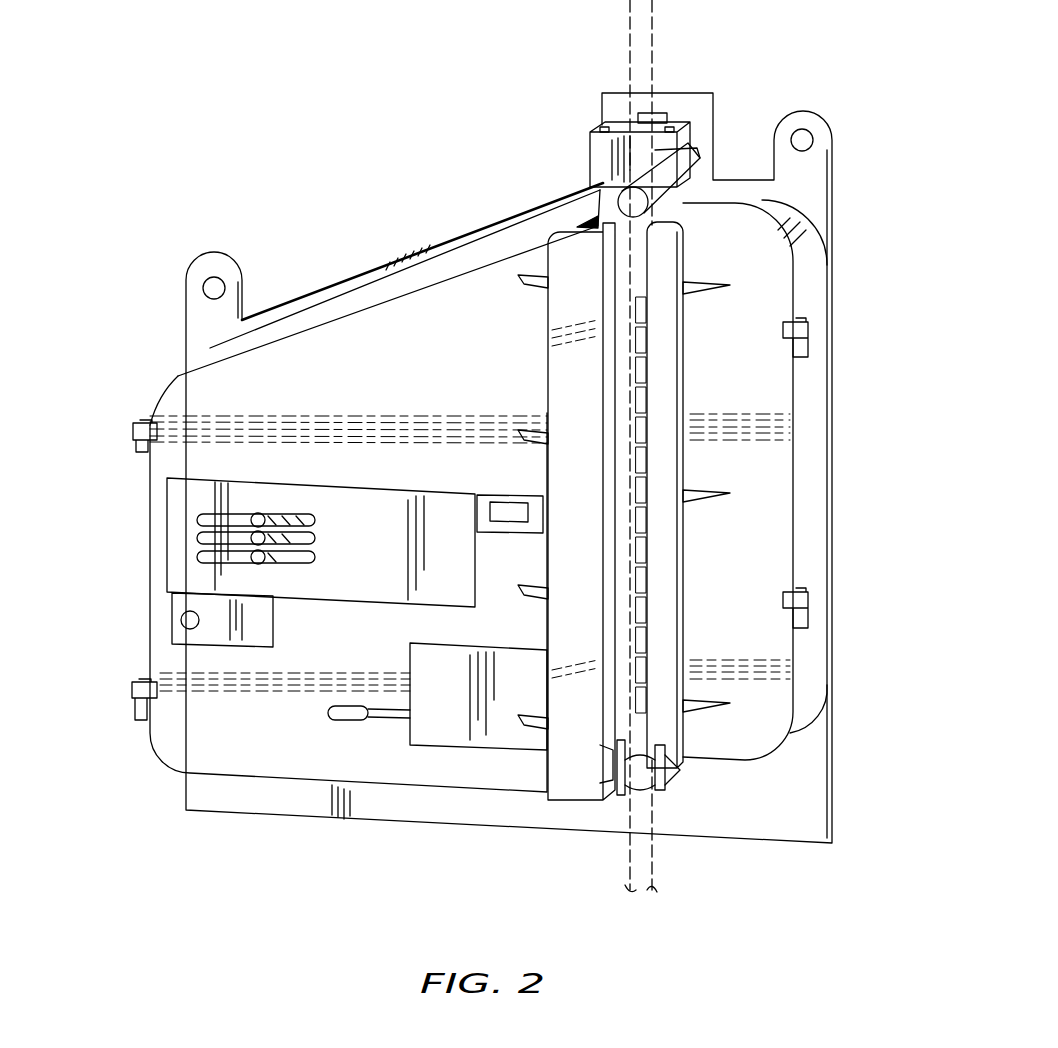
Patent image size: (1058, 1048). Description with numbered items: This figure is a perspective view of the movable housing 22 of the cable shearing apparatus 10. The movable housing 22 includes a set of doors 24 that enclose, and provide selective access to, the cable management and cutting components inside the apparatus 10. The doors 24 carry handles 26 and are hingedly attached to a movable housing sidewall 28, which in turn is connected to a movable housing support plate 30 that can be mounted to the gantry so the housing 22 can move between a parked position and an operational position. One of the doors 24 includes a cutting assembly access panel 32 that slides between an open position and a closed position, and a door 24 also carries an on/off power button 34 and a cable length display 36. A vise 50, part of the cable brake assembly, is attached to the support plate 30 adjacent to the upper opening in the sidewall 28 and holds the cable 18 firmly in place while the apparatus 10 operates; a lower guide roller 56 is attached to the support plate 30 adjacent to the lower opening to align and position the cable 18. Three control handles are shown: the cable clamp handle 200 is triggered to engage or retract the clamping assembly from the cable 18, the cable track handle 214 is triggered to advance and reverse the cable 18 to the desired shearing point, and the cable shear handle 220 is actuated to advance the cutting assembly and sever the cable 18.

The cable shearing apparatus 10 is at (278, 80).
The cable 18 is at (637, 852).
The movable housing 22 is at (433, 240).
The doors 24 is at (242, 752).
The handles 26 is at (567, 258).
The movable housing sidewall 28 is at (815, 660).
The movable housing support plate 30 is at (775, 812).
The cutting assembly access panel 32 is at (448, 722).
The on/off power button 34 is at (190, 620).
The cable length display 36 is at (500, 508).
The vise 50 is at (597, 150).
The lower guide roller 56 is at (670, 783).
The cable clamp handle 200 is at (258, 520).
The cable track handle 214 is at (258, 540).
The cable shear handle 220 is at (262, 557).